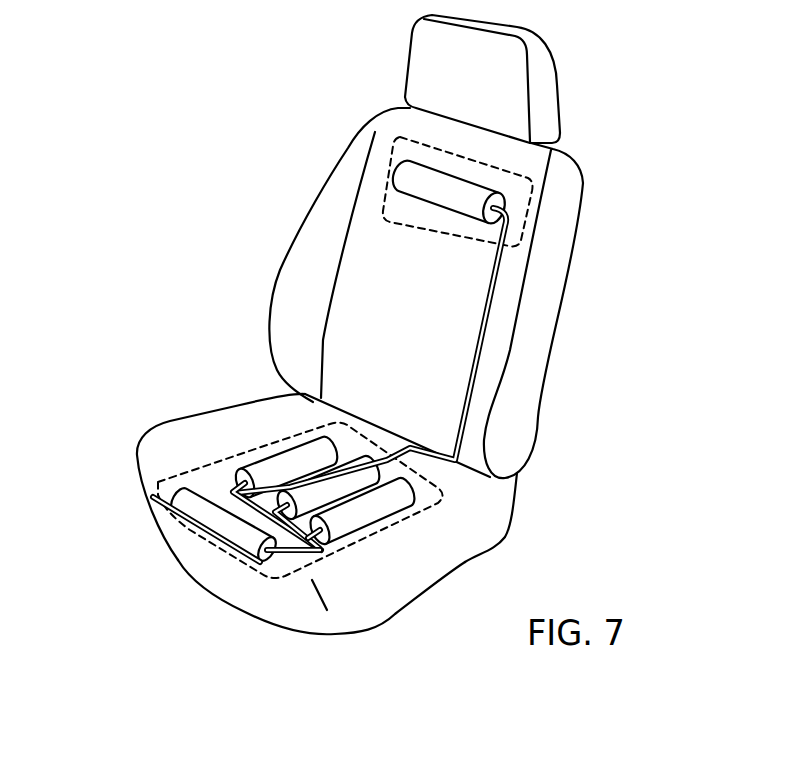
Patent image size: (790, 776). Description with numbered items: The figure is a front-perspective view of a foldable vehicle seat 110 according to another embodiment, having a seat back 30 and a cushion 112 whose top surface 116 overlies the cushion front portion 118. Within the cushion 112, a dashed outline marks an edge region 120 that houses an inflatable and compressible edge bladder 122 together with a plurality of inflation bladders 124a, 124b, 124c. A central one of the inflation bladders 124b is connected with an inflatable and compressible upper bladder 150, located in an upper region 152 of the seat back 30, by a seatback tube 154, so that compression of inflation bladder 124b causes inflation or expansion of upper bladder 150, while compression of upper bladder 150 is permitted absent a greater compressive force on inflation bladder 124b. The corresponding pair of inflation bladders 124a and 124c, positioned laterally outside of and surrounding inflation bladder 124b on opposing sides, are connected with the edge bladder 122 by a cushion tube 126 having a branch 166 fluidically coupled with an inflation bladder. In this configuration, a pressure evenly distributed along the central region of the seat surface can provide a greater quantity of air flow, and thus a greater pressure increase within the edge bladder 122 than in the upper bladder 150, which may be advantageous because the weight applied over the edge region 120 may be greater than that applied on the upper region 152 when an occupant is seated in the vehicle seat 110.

The vehicle seat 110 is at (601, 146).
The seat back 30 is at (535, 318).
The cushion 112 is at (499, 507).
The seat cushion top surface 116 is at (217, 443).
The seat cushion front portion 118 is at (390, 527).
The edge region 120 is at (150, 476).
The edge bladder 122 is at (223, 527).
The inflation bladder 124a is at (290, 457).
The inflation bladder 124b is at (353, 470).
The inflation bladder 124c is at (385, 512).
The cushion tube 126 is at (307, 553).
The upper bladder 150 is at (423, 183).
The upper region 152 is at (393, 141).
The seatback tube 154 is at (477, 343).
The branch 166 is at (337, 533).